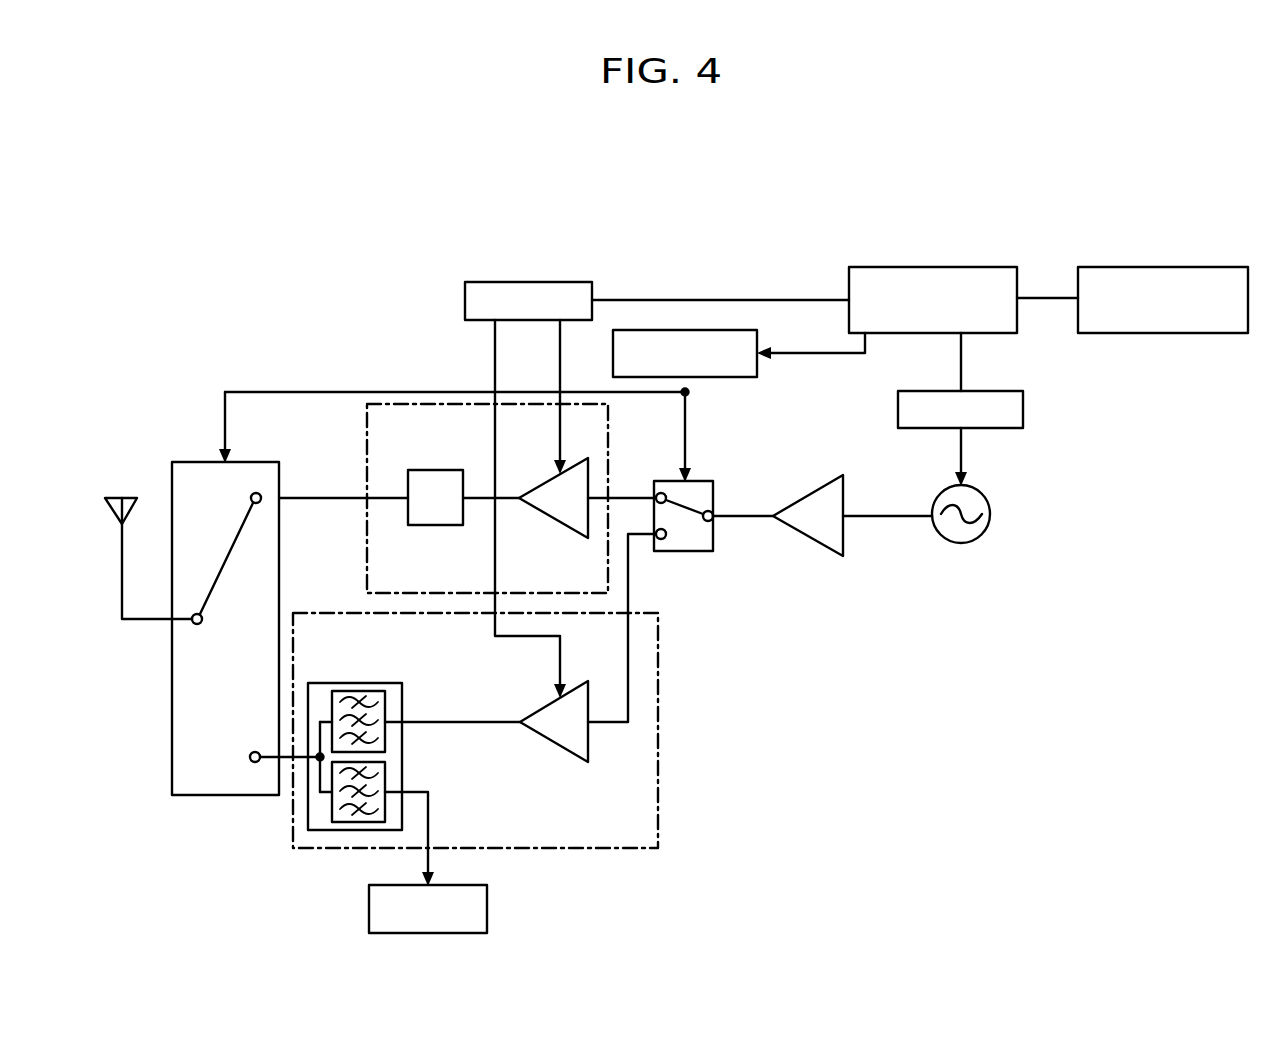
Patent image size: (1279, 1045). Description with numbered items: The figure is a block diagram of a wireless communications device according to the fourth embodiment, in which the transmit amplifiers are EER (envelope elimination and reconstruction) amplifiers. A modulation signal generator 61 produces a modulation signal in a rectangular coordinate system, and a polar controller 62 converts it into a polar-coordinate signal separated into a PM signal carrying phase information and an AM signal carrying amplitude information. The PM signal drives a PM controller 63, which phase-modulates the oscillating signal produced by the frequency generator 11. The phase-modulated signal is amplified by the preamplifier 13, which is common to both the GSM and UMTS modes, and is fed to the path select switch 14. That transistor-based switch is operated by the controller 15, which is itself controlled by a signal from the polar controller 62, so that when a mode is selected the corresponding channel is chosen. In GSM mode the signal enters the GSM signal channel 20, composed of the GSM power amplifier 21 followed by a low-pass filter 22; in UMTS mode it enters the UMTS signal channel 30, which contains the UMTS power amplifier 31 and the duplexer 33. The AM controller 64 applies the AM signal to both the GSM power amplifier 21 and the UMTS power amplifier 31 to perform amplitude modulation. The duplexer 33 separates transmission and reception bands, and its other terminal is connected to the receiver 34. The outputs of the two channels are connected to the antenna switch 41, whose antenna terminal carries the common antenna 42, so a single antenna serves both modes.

The frequency generator 11 is at (990, 512).
The preamplifier 13 is at (806, 535).
The path select switch 14 is at (685, 551).
The controller 15 is at (723, 377).
The GSM signal channel 20 is at (367, 437).
The GSM power amplifier 21 is at (545, 513).
The low-pass filter 22 is at (432, 525).
The UMTS signal channel 30 is at (660, 825).
The UMTS power amplifier 31 is at (545, 737).
The duplexer 33 is at (372, 683).
The receiver 34 is at (487, 905).
The antenna switch 41 is at (230, 795).
The common antenna 42 is at (118, 498).
The modulation signal generator 61 is at (1170, 267).
The polar controller 62 is at (938, 267).
The PM controller 63 is at (1023, 406).
The AM controller 64 is at (527, 282).